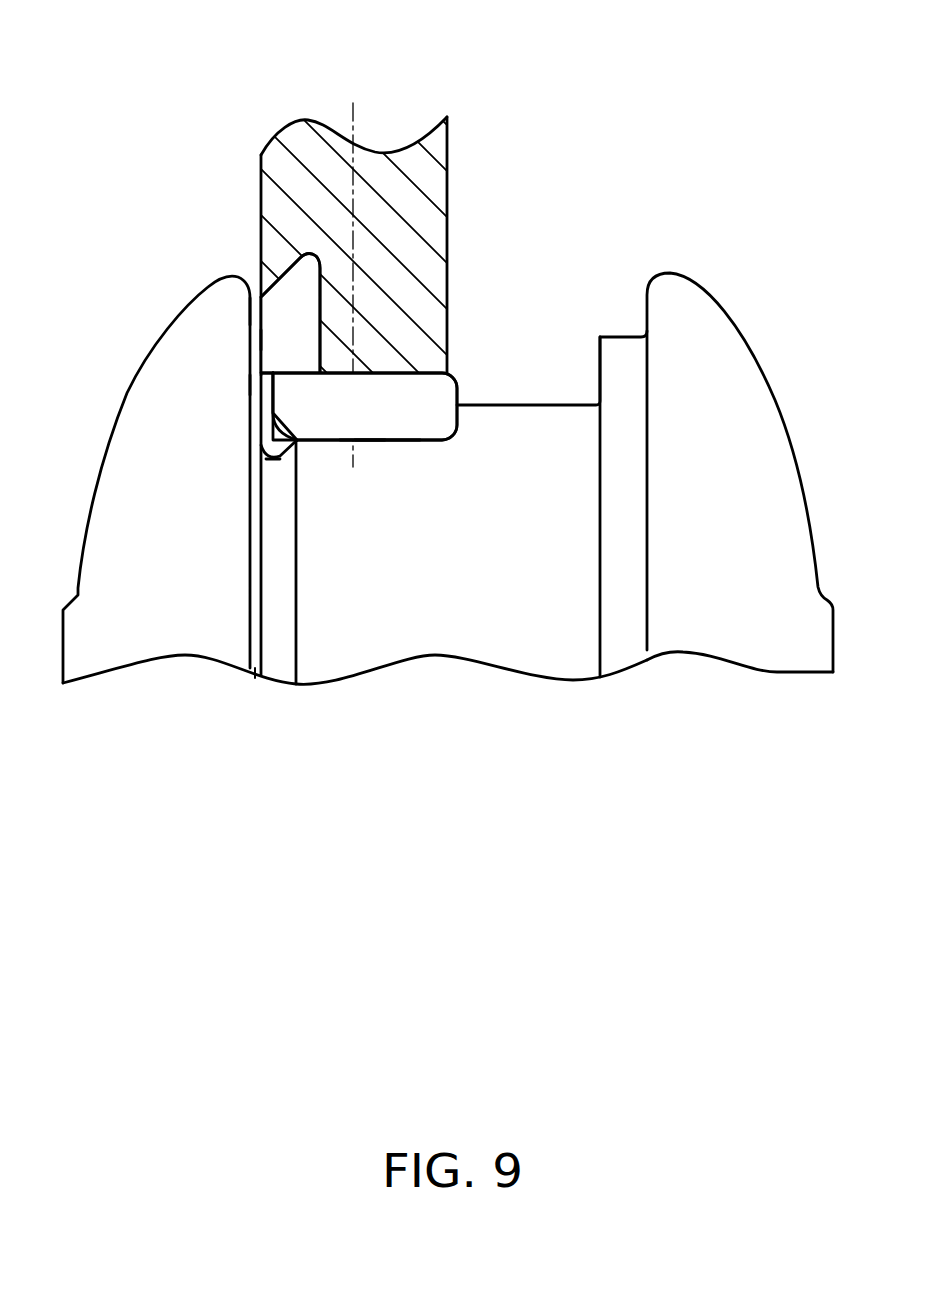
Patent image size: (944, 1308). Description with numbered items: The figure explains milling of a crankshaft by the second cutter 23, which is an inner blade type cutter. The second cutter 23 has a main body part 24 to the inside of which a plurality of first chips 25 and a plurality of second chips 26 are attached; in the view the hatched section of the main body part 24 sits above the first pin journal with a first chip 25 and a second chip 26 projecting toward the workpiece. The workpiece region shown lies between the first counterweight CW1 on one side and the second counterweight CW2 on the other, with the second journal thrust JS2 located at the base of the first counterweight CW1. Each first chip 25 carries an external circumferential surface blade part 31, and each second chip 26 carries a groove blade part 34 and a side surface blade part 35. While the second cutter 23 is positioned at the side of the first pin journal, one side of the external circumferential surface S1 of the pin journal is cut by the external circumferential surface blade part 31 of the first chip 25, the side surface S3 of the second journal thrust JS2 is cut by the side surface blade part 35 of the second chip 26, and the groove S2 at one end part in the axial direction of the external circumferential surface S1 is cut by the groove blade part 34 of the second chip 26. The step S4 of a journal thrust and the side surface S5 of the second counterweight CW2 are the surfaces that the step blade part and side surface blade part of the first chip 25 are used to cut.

The second cutter 23 is at (471, 87).
The main body part 24 is at (447, 190).
The first chip 25 is at (460, 393).
The second chip 26 is at (283, 270).
The external circumferential surface blade part 31 is at (375, 438).
The groove blade part 34 is at (279, 450).
The side surface blade part 35 is at (268, 373).
The external circumferential surface S1 is at (369, 450).
The groove S2 is at (276, 466).
The side surface S3 is at (258, 386).
The step S4 is at (255, 338).
The side surface S5 is at (247, 310).
The first counterweight CW1 is at (208, 504).
The second counterweight CW2 is at (744, 504).
The second journal thrust JS2 is at (255, 668).